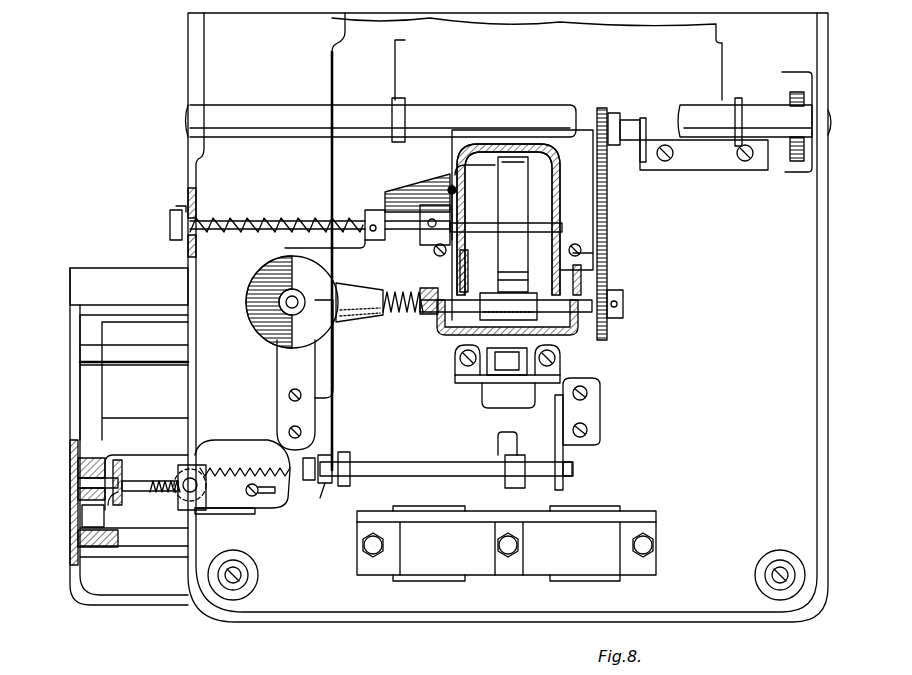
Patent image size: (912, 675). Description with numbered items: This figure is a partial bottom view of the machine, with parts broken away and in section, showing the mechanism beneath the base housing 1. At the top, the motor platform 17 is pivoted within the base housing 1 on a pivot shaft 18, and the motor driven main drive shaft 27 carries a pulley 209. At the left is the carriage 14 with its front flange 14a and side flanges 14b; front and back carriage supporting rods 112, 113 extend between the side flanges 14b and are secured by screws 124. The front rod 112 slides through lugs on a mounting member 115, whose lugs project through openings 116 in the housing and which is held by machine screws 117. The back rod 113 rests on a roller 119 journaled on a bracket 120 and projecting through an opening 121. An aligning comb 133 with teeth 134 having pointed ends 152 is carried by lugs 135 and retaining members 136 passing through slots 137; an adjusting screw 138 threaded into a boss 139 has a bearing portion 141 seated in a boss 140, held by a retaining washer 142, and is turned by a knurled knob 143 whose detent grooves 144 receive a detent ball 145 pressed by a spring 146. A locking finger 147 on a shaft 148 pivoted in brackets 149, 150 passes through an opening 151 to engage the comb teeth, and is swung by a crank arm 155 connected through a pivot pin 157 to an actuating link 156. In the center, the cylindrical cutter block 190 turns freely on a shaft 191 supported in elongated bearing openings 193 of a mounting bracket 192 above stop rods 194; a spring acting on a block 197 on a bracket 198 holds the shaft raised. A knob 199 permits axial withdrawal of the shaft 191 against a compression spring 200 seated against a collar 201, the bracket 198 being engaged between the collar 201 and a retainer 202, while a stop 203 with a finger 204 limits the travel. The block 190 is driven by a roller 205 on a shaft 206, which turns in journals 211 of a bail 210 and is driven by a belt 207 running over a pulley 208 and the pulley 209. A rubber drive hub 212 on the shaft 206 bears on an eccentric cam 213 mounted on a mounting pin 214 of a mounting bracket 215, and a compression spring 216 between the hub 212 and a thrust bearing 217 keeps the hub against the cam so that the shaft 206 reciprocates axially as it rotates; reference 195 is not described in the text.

The base housing 1 is at (820, 333).
The carriage 14 is at (112, 607).
The front flange 14a is at (158, 606).
The side flange 14b is at (76, 336).
The platform 17 is at (716, 52).
The pivot shaft 18 is at (751, 112).
The main drive shaft 27 is at (633, 145).
The front carriage supporting rod 112 is at (152, 550).
The back carriage supporting rod 113 is at (525, 398).
The mounting member 115 is at (480, 565).
The openings 116 is at (432, 510).
The machine screws 117 is at (362, 547).
The roller 119 is at (506, 376).
The bracket 120 is at (463, 383).
The opening 121 is at (470, 345).
The screws 124 is at (96, 548).
The aligning comb 133 is at (190, 500).
The teeth 134 is at (240, 462).
The lugs 135 is at (246, 491).
The retaining members 136 is at (213, 508).
The slots 137 is at (270, 494).
The adjusting screw 138 is at (143, 484).
The boss 139 is at (203, 457).
The boss 140 is at (108, 478).
The bearing portion 141 is at (90, 462).
The retaining washer 142 is at (84, 458).
The knurled knob 143 is at (140, 462).
The detent grooves 144 is at (120, 492).
The detent ball 145 is at (125, 511).
The spring 146 is at (93, 508).
The locking finger 147 is at (506, 455).
The shaft 148 is at (400, 462).
The bracket 149 is at (565, 462).
The bracket 150 is at (335, 458).
The opening 151 is at (500, 440).
The pointed ends 152 is at (228, 450).
The crank arm 155 is at (350, 468).
The actuating link 156 is at (336, 375).
The pivot pin 157 is at (318, 496).
The cutter block 190 is at (510, 160).
The shaft 191 is at (470, 225).
The mounting bracket 192 is at (560, 188).
The elongated bearing openings 193 is at (443, 202).
The stop rods 194 is at (462, 185).
The wall 195 is at (558, 225).
The block 197 is at (420, 243).
The bracket 198 is at (400, 186).
The knob 199 is at (170, 218).
The compression spring 200 is at (265, 220).
The collar 201 is at (386, 200).
The retainer 202 is at (433, 252).
The stop 203 is at (366, 220).
The finger 204 is at (285, 249).
The roller 205 is at (572, 335).
The shaft 206 is at (609, 295).
The belt 207 is at (608, 227).
The pulley 208 is at (608, 330).
The pulley 209 is at (604, 112).
The bail 210 is at (490, 326).
The journals 211 is at (464, 290).
The drive hub 212 is at (362, 320).
The cam 213 is at (258, 326).
The mounting pin 214 is at (286, 303).
The mounting bracket 215 is at (283, 367).
The compression spring 216 is at (406, 318).
The thrust bearing 217 is at (434, 290).